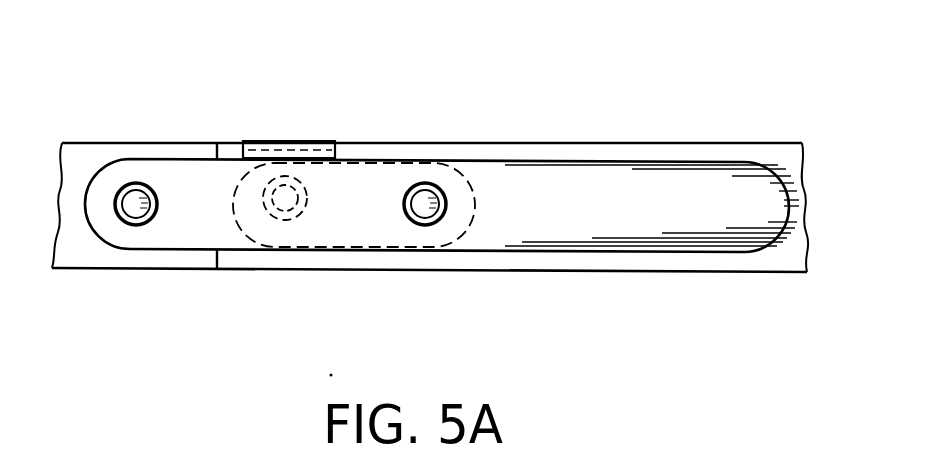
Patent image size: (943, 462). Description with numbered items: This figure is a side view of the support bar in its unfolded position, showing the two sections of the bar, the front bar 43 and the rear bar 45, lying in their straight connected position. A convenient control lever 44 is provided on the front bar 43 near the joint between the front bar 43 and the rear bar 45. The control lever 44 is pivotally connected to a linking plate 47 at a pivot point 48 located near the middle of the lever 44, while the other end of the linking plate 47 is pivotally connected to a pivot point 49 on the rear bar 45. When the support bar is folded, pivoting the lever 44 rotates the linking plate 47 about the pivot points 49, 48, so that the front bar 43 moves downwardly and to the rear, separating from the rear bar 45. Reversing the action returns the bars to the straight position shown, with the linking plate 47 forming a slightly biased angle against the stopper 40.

The stopper 40 is at (317, 143).
The front bar 43 is at (105, 147).
The control lever 44 is at (653, 184).
The rear bar 45 is at (560, 151).
The linking plate 47 is at (349, 246).
The pivot point 48 is at (426, 184).
The pivot point 49 is at (281, 192).